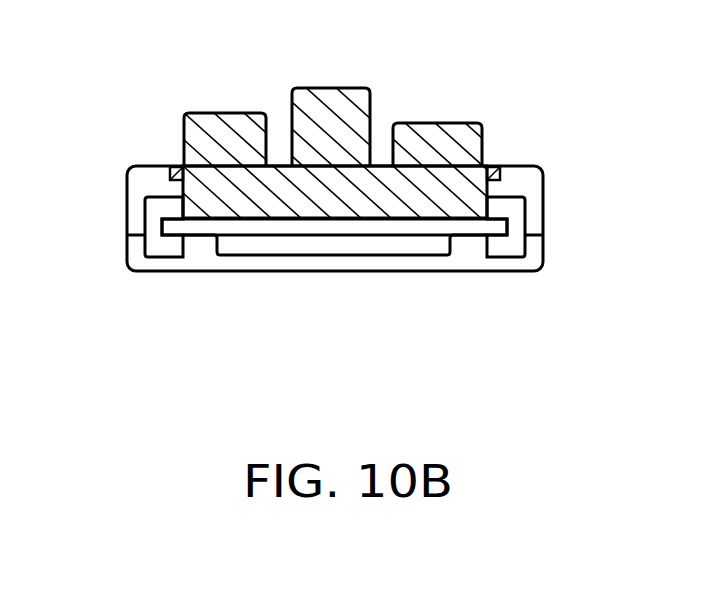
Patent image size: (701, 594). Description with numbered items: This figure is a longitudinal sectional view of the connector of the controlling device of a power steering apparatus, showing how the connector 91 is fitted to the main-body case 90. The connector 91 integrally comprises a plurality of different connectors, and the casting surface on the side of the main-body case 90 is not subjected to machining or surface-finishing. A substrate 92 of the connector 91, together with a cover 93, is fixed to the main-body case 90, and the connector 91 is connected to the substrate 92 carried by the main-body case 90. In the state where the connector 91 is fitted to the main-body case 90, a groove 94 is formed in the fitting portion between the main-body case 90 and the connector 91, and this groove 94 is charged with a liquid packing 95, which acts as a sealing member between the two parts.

The main-body case 90 is at (527, 178).
The connector 91 is at (237, 180).
The substrate 92 is at (283, 228).
The cover 93 is at (530, 259).
The groove 94 is at (180, 172).
The liquid packing 95 is at (176, 166).